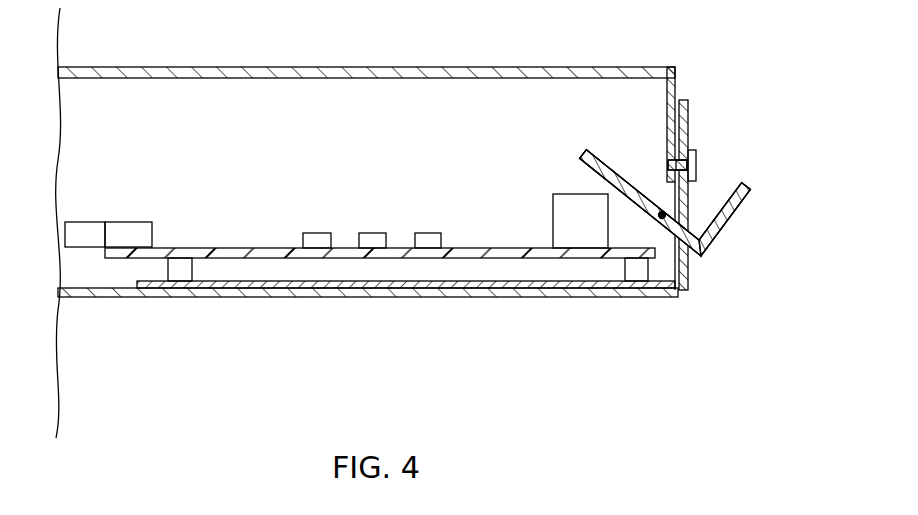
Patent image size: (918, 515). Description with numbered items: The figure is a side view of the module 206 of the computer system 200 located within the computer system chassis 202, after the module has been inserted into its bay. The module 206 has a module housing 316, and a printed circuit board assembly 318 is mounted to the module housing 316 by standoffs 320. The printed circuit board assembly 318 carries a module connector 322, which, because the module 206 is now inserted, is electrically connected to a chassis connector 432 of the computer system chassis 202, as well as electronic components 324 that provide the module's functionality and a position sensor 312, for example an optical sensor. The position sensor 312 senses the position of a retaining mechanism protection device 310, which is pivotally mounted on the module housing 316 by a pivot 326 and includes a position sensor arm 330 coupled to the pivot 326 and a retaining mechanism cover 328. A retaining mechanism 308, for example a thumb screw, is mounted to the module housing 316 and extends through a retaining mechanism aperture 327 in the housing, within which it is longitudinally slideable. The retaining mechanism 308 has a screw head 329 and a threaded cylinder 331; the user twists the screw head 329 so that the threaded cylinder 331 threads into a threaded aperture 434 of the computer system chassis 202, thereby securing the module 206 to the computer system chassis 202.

The computer system 200 is at (434, 223).
The computer system chassis 202 is at (383, 67).
The module 206 is at (360, 202).
The retaining mechanism 308 is at (692, 185).
The retaining mechanism protection device 310 is at (673, 196).
The position sensor 312 is at (553, 205).
The module housing 316 is at (567, 290).
The printed circuit board assembly 318 is at (467, 240).
The standoffs 320 is at (182, 273).
The module connector 322 is at (137, 222).
The electronic components 324 is at (420, 233).
The pivot 326 is at (665, 213).
The retaining mechanism aperture 327 is at (685, 147).
The retaining mechanism cover 328 is at (748, 203).
The screw head 329 is at (694, 168).
The position sensor arm 330 is at (585, 154).
The threaded cylinder 331 is at (668, 167).
The chassis connector 432 is at (87, 222).
The threaded aperture 434 is at (680, 157).